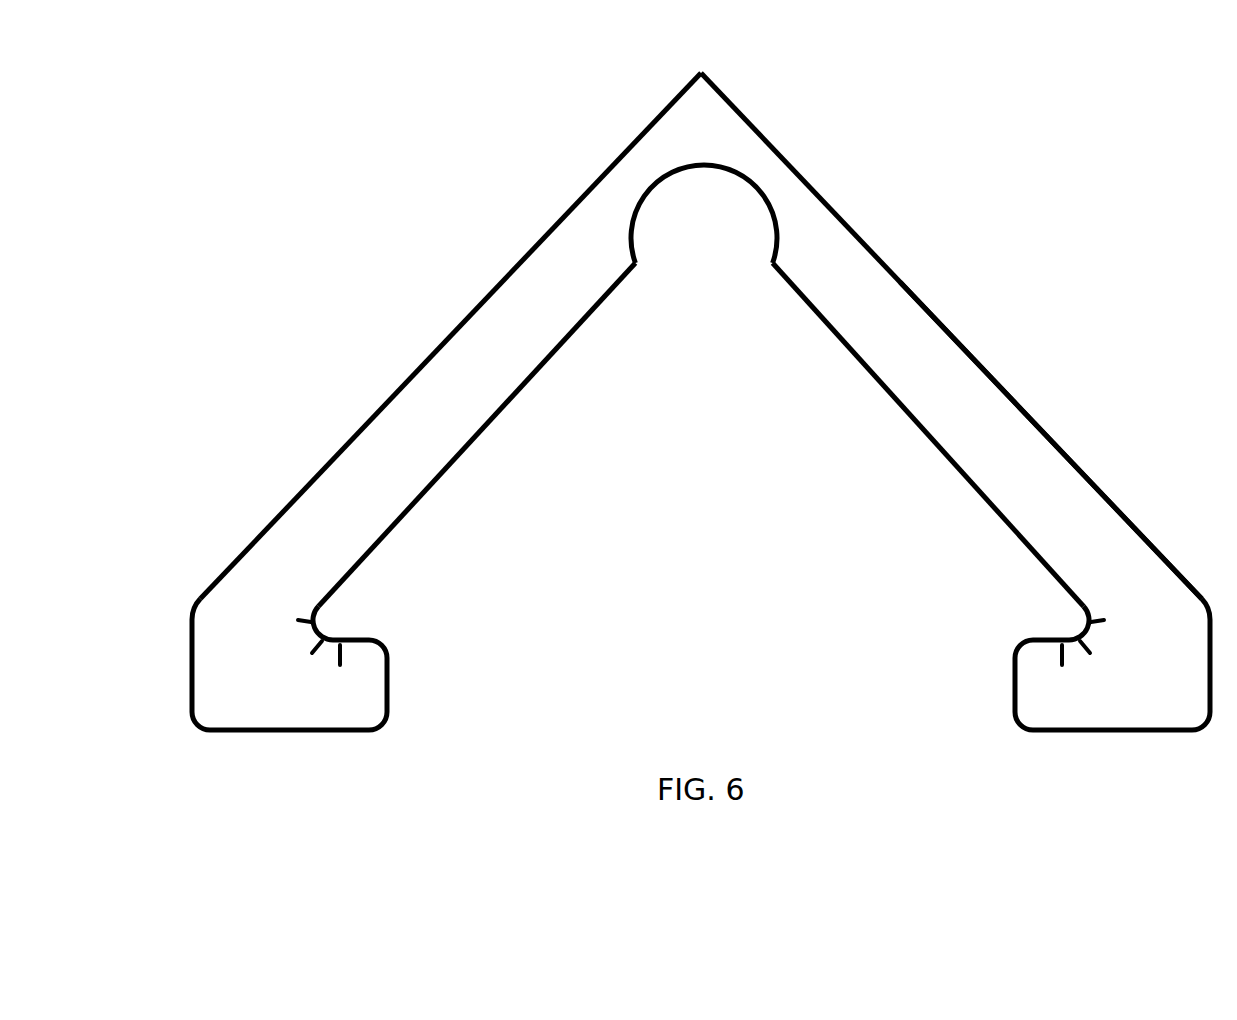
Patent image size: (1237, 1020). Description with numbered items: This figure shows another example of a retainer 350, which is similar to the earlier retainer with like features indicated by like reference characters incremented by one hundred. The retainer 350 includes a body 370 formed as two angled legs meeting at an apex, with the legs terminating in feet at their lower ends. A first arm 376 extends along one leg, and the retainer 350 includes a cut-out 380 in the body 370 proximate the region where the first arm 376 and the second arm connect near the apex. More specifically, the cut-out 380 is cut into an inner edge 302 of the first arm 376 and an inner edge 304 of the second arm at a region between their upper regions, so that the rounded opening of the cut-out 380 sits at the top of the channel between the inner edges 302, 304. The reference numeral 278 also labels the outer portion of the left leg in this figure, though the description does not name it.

The retainer 350 is at (943, 122).
The outer wall 278 is at (547, 273).
The body 370 is at (890, 308).
The first arm 376 is at (942, 364).
The cut-out 380 is at (707, 248).
The inner edge of the second arm 304 is at (490, 423).
The inner edge of the first arm 302 is at (912, 421).